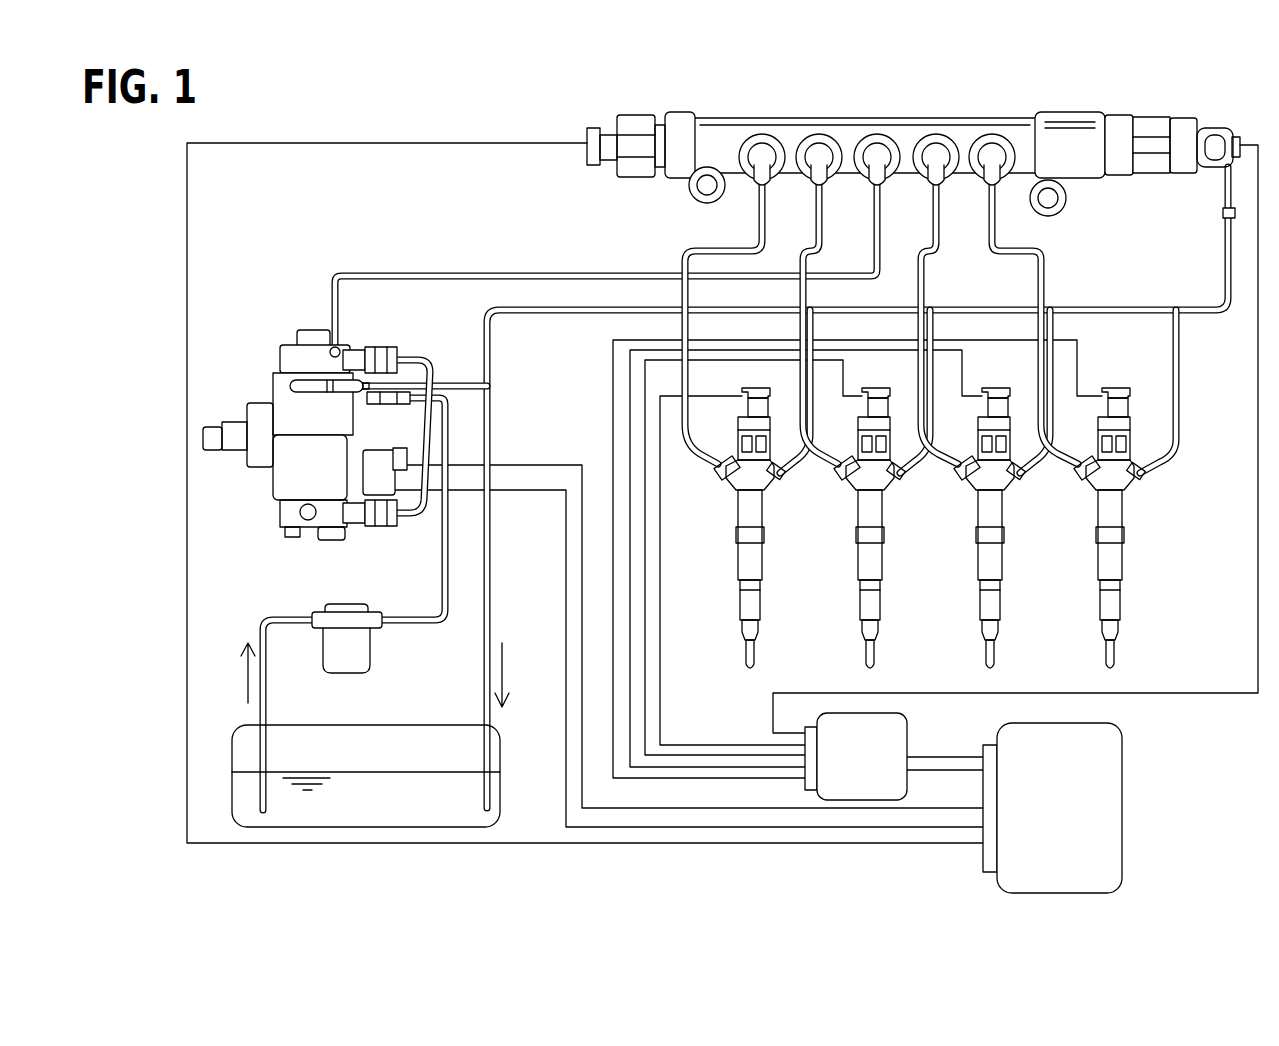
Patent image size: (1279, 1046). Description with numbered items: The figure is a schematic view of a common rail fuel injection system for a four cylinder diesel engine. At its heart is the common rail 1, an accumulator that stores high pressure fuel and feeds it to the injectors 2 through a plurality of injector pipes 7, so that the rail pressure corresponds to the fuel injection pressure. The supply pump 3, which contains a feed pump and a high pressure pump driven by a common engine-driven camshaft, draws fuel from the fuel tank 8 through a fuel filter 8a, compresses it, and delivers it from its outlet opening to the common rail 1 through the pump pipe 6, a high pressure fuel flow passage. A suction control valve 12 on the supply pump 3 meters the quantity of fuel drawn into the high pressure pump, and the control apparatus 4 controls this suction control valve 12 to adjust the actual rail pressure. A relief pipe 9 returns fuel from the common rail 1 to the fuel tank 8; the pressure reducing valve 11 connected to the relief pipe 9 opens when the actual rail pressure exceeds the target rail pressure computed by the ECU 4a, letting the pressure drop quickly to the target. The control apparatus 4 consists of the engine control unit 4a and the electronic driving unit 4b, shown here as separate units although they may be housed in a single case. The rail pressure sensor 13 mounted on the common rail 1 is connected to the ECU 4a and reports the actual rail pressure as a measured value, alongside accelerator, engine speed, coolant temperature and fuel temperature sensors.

The common rail 1 is at (880, 120).
The injectors 2 is at (757, 562).
The supply pump 3 is at (278, 331).
The control apparatus 4 is at (1012, 796).
The engine control unit (ECU) 4a is at (1086, 808).
The electronic driving unit (EDU) 4b is at (907, 727).
The pump pipe 6 is at (560, 272).
The injector pipes 7 is at (818, 208).
The fuel tank 8 is at (375, 725).
The fuel filter 8a is at (372, 652).
The relief pipe 9 is at (500, 445).
The pressure reducing valve 11 is at (1152, 117).
The suction control valve (SCV) 12 is at (385, 470).
The rail pressure sensor 13 is at (637, 115).